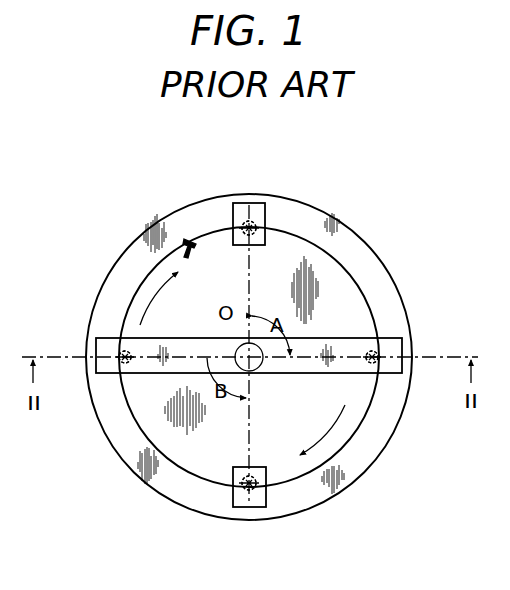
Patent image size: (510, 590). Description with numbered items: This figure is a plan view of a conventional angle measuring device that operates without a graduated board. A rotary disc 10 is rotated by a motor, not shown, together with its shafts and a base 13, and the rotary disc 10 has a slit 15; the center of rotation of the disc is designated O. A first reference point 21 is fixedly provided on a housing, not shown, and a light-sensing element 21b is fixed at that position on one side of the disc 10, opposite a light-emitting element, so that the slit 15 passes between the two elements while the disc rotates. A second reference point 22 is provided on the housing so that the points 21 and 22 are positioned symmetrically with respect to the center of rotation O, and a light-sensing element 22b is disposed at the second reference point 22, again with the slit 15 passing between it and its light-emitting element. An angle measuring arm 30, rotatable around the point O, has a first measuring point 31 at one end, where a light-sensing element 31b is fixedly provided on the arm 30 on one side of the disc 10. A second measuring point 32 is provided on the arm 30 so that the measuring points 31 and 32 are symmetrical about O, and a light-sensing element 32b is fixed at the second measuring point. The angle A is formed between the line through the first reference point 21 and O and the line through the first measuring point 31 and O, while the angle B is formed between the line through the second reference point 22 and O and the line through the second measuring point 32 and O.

The rotary disc 10 is at (340, 275).
The base 13 is at (370, 447).
The slit 15 is at (197, 240).
The first reference point 21 is at (255, 228).
The light-sensing element 21b is at (248, 222).
The second reference point 22 is at (250, 490).
The light-sensing element 22b is at (257, 487).
The angle measuring arm 30 is at (395, 348).
The first measuring point 31 is at (376, 362).
The light-sensing element 31b is at (380, 350).
The second measuring point 32 is at (122, 355).
The light-sensing element 32b is at (118, 369).